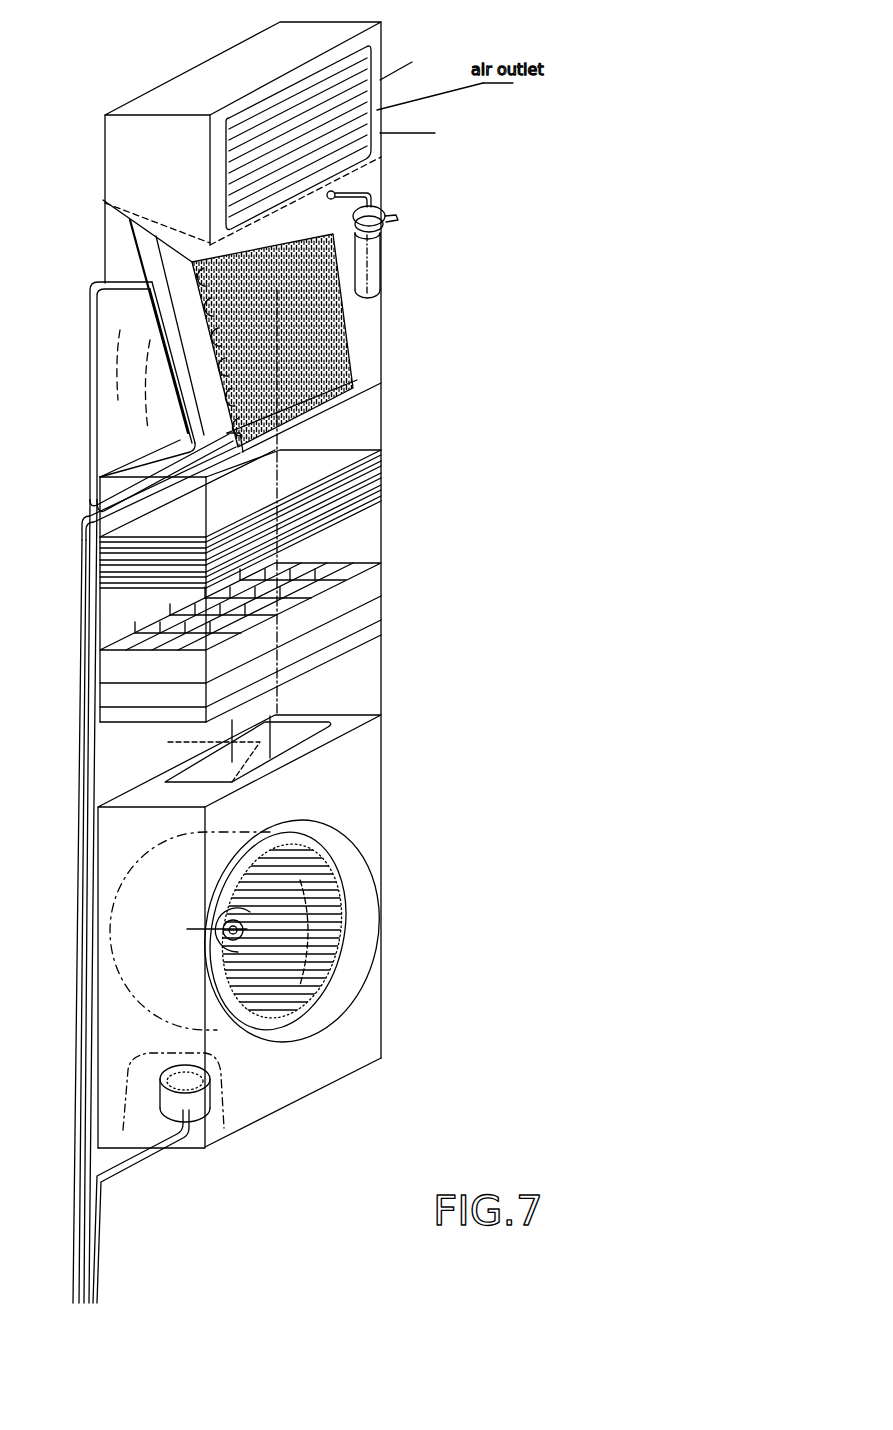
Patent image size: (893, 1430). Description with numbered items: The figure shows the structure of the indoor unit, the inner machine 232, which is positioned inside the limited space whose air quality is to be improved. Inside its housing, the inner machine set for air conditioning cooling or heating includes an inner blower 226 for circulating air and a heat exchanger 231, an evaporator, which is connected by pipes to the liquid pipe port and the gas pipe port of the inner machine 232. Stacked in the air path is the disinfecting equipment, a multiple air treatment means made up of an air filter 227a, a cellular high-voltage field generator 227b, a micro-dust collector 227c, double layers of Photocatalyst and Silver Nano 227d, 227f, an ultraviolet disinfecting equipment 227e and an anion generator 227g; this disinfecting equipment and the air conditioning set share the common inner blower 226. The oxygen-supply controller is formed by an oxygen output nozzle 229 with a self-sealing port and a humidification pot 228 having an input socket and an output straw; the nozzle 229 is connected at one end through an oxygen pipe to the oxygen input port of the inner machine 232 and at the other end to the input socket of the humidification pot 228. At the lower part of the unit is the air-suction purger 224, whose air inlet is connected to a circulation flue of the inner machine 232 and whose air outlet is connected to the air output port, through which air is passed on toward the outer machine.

The air-suction purger 224 is at (210, 1087).
The inner blower 226 is at (343, 867).
The air filter 227a is at (363, 630).
The cellular high-voltage field generator 227b is at (337, 602).
The micro-dust collector 227c is at (381, 520).
The layer of Photocatalyst and Silver Nano 227d is at (381, 487).
The ultraviolet disinfecting equipment 227e is at (381, 472).
The layer of Photocatalyst and Silver Nano 227f is at (381, 460).
The anion generator 227g is at (381, 447).
The humidification pot 228 is at (377, 247).
The oxygen output nozzle 229 is at (355, 190).
The heat exchanger 231 is at (345, 350).
The inner machine 232 is at (380, 52).